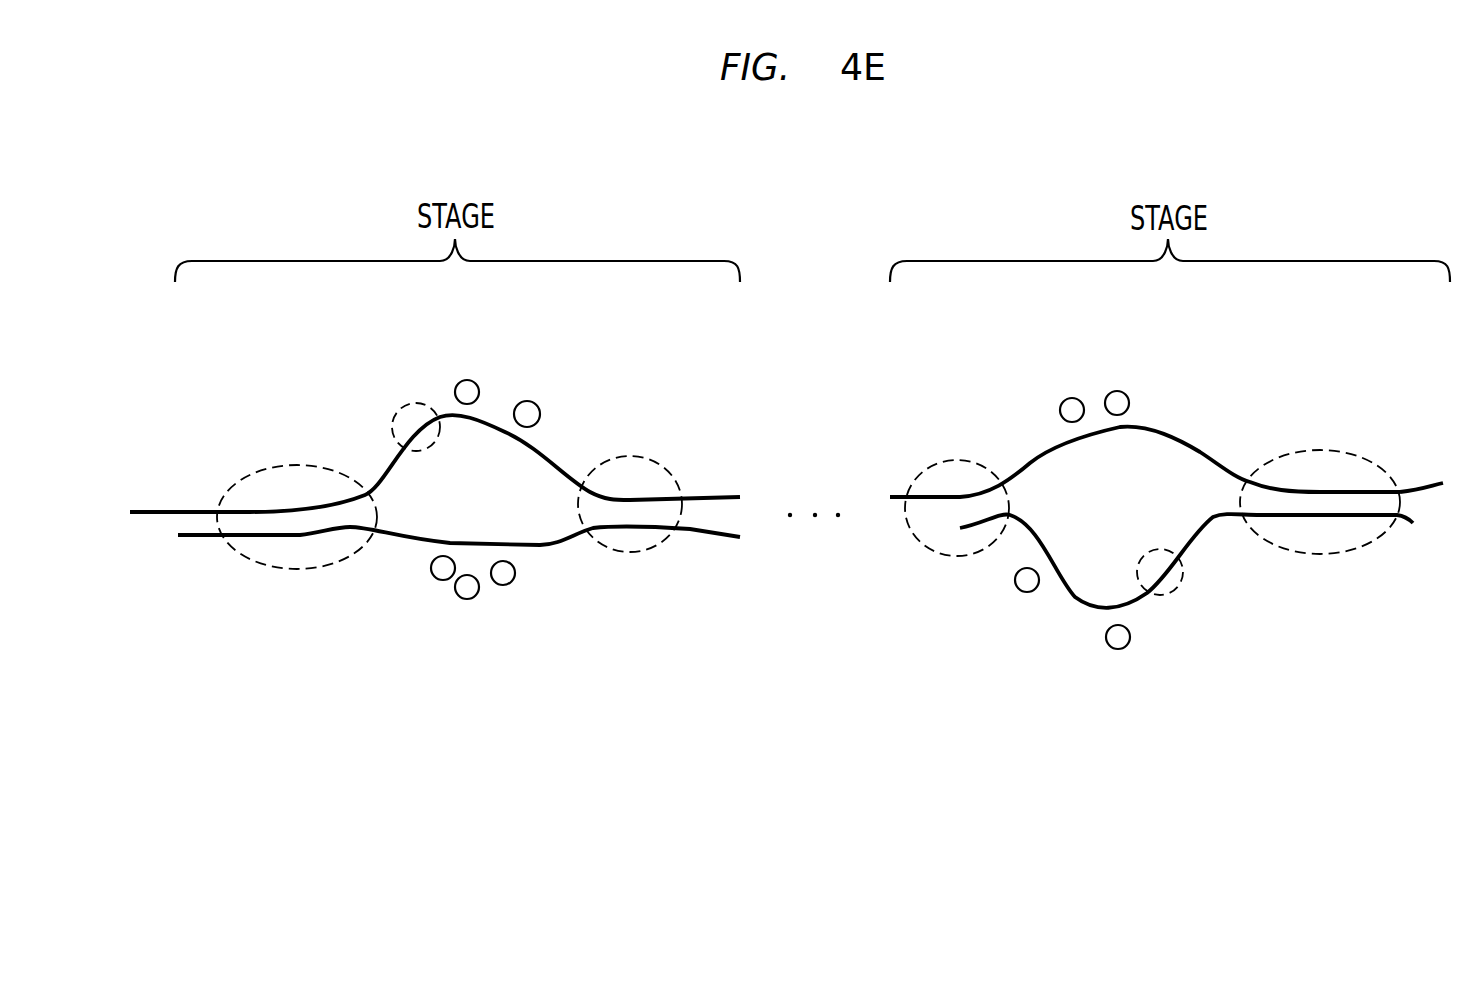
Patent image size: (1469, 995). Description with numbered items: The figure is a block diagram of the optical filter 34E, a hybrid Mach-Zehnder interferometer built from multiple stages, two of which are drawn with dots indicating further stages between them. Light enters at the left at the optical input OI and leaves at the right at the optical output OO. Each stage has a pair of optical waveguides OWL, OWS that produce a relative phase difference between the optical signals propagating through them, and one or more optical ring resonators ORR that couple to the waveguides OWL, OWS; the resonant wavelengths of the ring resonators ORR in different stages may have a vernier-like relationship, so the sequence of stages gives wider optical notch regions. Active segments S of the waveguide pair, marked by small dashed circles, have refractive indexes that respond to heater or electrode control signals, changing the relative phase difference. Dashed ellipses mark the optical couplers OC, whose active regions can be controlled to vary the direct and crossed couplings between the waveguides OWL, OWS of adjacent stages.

The optical input OI is at (157, 510).
The optical coupler OC is at (287, 463).
The optical waveguide OWL is at (1067, 627).
The optical waveguide OWS is at (400, 535).
The active segment S is at (427, 450).
The optical ring resonator ORR is at (478, 388).
The optical output OO is at (1430, 482).
The optical filter 34E is at (423, 737).